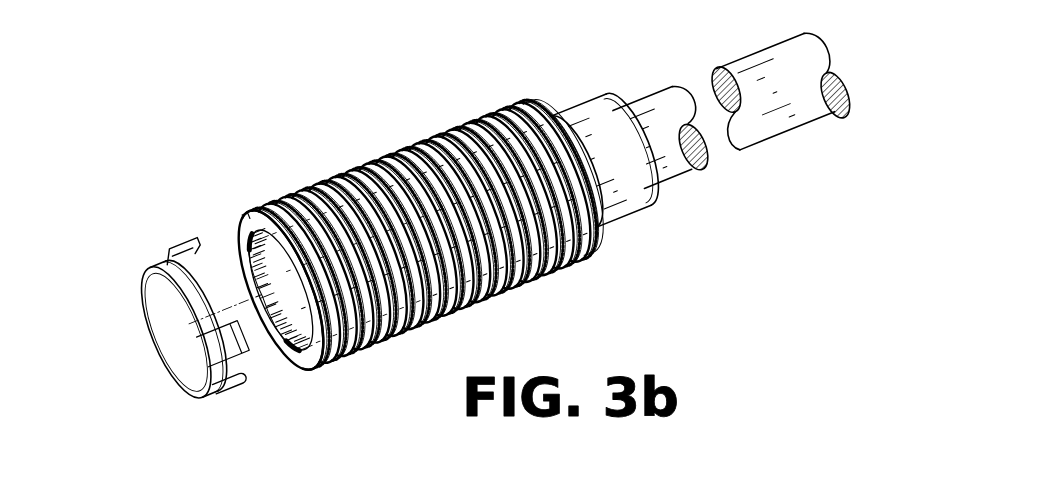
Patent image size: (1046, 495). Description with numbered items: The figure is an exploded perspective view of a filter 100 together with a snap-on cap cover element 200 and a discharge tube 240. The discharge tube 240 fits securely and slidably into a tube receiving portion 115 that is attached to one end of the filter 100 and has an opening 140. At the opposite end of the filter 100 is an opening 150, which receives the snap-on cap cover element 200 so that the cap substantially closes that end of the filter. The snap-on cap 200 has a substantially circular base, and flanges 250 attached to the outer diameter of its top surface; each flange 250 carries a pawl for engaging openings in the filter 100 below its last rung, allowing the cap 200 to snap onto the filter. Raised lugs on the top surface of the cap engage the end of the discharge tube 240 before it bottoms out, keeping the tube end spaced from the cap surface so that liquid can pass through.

The filter 100 is at (335, 94).
The tube receiving portion 115 is at (627, 208).
The opening 140 is at (624, 103).
The opening 150 is at (250, 293).
The snap-on cap cover element 200 is at (125, 315).
The discharge tube 240 is at (776, 152).
The flanges 250 is at (182, 248).